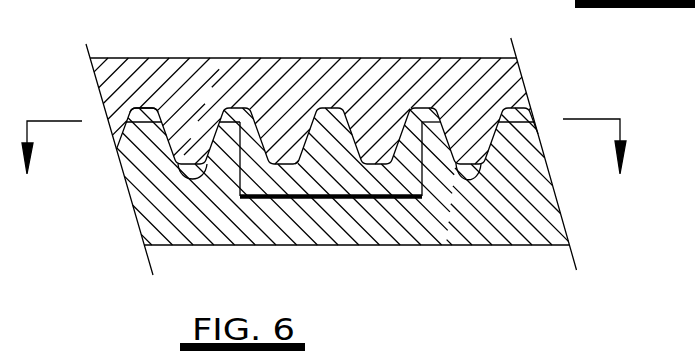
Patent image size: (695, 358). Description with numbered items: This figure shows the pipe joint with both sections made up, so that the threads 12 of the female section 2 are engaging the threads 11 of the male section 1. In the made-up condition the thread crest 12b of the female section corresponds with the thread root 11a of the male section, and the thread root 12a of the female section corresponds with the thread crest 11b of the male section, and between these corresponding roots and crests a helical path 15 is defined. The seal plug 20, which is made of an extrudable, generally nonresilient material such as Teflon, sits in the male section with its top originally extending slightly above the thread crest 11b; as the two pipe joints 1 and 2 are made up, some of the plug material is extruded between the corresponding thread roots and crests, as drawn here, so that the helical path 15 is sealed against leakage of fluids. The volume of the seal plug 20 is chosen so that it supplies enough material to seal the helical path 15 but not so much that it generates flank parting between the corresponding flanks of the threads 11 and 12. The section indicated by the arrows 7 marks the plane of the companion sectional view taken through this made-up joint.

The male section 1 is at (263, 246).
The female section 2 is at (354, 58).
The section line 7- 7 is at (324, 150).
The threads 11 is at (228, 167).
The thread root 11a is at (474, 177).
The thread crest 11b is at (133, 113).
The threads 12 is at (287, 130).
The thread root 12a is at (150, 110).
The thread crest 12b is at (465, 163).
The helical path 15 is at (456, 168).
The seal plug 20 is at (342, 177).